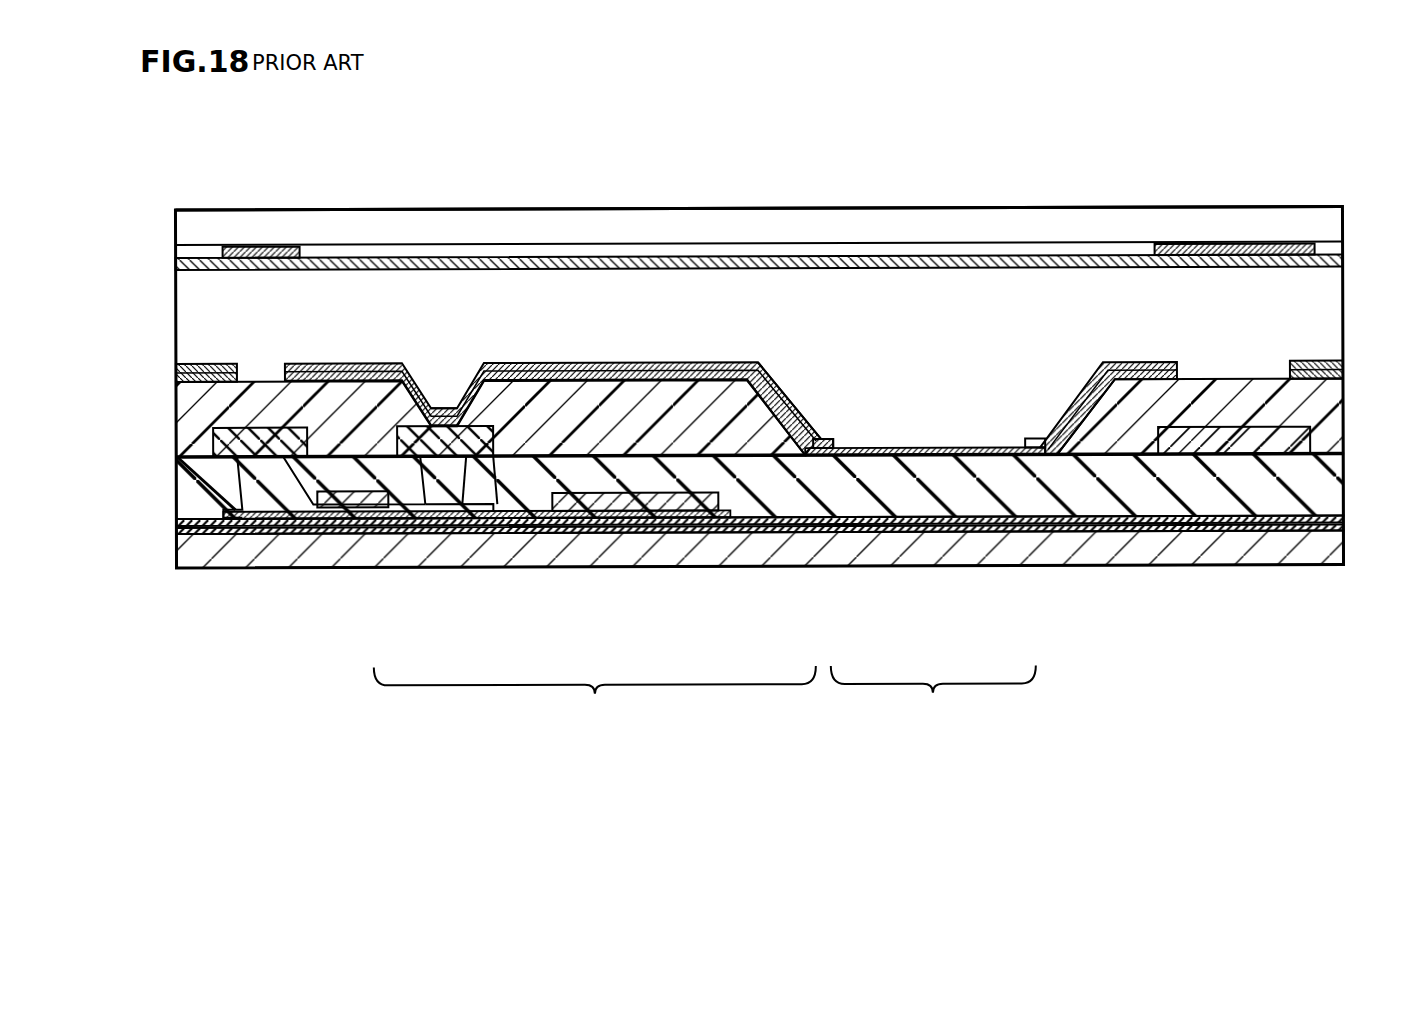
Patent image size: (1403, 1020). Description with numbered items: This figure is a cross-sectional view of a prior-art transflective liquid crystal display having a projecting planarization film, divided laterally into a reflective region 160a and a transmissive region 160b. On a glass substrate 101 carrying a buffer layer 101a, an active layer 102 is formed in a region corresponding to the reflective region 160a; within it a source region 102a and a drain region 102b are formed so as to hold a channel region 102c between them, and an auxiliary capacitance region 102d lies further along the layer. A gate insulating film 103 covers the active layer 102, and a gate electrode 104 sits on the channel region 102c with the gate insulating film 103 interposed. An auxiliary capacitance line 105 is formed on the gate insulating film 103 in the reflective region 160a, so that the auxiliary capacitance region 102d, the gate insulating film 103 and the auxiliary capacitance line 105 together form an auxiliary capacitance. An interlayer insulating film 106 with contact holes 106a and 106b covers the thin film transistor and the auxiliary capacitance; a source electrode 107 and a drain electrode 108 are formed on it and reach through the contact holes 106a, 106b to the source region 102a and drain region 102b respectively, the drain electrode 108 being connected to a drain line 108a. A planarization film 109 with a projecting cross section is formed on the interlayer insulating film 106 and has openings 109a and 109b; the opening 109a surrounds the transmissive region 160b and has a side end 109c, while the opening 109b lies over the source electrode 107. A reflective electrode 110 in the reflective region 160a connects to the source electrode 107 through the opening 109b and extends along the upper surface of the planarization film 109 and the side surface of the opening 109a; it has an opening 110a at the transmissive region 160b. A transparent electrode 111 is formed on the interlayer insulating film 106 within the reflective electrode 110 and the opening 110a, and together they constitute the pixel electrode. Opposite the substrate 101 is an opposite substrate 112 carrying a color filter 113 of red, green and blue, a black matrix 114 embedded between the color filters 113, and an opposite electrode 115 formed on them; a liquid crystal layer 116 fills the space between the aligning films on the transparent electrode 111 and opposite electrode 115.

The glass substrate 101 is at (183, 562).
The buffer layer 101a is at (178, 530).
The active layer 102 is at (238, 520).
The source region 102a is at (403, 524).
The drain region 102b is at (297, 521).
The channel region 102c is at (343, 521).
The auxiliary capacitance region 102d is at (640, 506).
The gate insulating film 103 is at (176, 522).
The gate electrode 104 is at (235, 407).
The auxiliary capacitance line 105 is at (683, 512).
The interlayer insulating film 106 is at (183, 500).
The contact hole 106a is at (450, 480).
The contact hole 106b is at (282, 472).
The source electrode 107 is at (490, 523).
The drain electrode 108 is at (226, 443).
The drain line 108a is at (1250, 447).
The planarization film 109 is at (198, 395).
The opening 109a is at (778, 398).
The opening 109b is at (418, 392).
The side end 109c is at (770, 434).
The reflective electrode 110 is at (178, 379).
The opening 110a is at (848, 457).
The transparent electrode 111 is at (178, 370).
The opposite substrate 112 is at (182, 232).
The color filter 113 is at (575, 250).
The black matrix 114 is at (245, 247).
The opposite electrode 115 is at (182, 266).
The liquid crystal layer 116 is at (182, 301).
The reflective region 160a is at (595, 700).
The transmissive region 160b is at (933, 699).